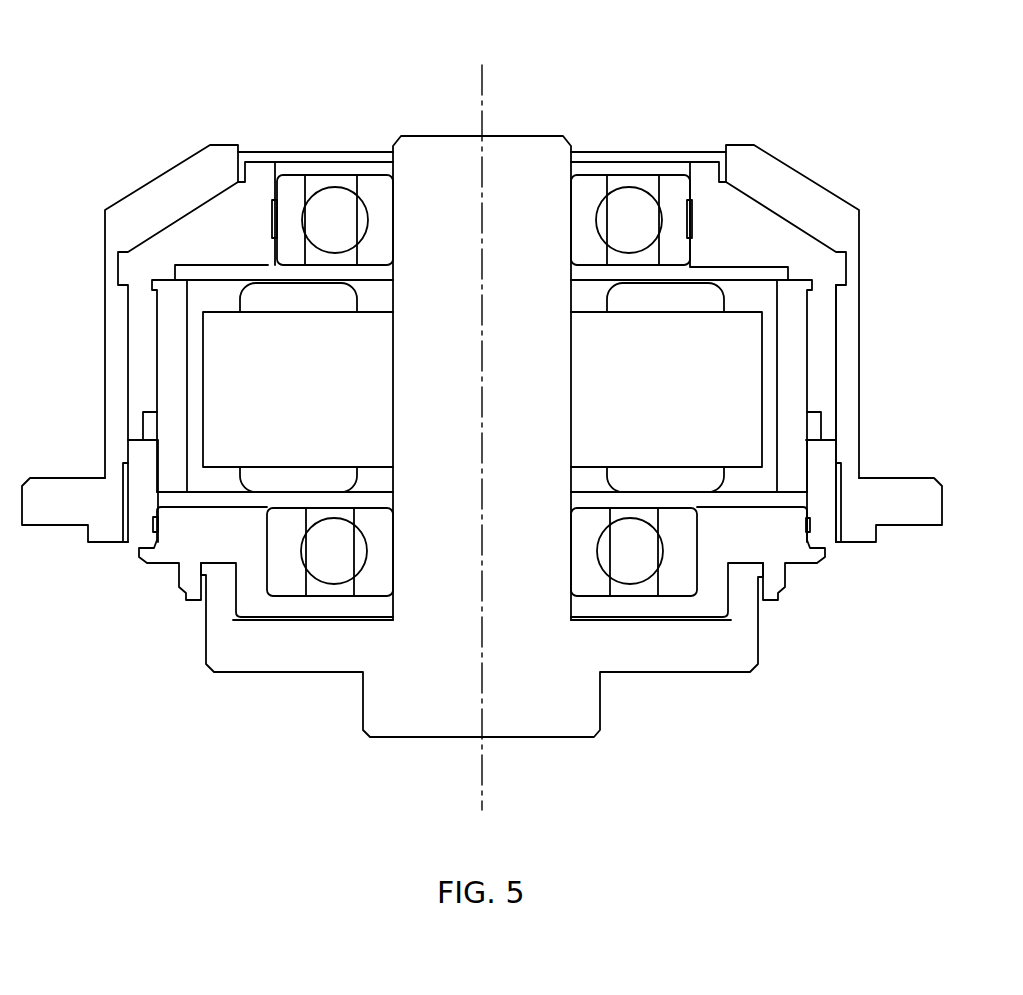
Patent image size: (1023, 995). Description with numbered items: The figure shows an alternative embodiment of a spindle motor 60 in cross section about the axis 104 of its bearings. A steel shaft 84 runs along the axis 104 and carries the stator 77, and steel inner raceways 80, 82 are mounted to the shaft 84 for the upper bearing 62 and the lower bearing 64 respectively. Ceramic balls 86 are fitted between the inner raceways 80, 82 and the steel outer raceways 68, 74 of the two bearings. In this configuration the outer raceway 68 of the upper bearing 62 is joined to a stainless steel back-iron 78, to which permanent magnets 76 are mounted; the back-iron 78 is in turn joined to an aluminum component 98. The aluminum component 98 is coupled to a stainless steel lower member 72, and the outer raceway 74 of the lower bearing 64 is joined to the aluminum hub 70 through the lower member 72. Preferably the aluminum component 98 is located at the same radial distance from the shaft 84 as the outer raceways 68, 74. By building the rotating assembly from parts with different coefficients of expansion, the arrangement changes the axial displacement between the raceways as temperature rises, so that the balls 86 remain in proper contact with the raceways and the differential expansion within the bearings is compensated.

The spindle motor 60 is at (885, 123).
The upper bearing 62 is at (637, 176).
The lower bearing 64 is at (628, 598).
The outer raceway 68 is at (288, 190).
The hub 70 is at (843, 235).
The lower member 72 is at (773, 543).
The outer raceway 74 is at (290, 530).
The permanent magnets 76 is at (792, 323).
The stator 77 is at (322, 401).
The back-iron 78 is at (823, 367).
The inner raceway 80 is at (383, 215).
The inner raceway 82 is at (385, 553).
The shaft 84 is at (540, 401).
The ceramic balls 86 is at (618, 224).
The aluminum component 98 is at (822, 500).
The axis 104 is at (482, 110).